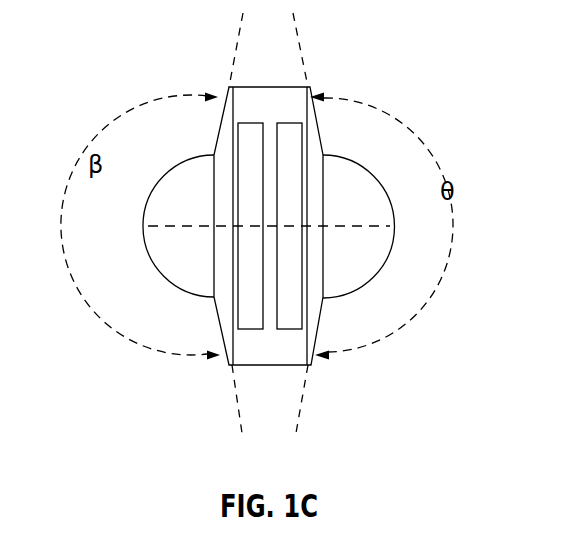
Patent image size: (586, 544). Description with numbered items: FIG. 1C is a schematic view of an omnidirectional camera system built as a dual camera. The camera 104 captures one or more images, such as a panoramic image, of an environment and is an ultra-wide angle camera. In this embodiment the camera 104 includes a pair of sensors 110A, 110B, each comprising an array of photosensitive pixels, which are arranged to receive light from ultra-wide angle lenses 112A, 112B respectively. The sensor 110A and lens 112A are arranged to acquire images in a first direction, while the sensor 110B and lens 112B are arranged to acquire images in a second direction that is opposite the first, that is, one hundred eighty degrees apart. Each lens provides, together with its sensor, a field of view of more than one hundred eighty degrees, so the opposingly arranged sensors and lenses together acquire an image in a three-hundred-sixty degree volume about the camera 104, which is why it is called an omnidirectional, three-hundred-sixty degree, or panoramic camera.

The camera 104 is at (250, 87).
The sensor 110A is at (287, 123).
The sensor 110B is at (250, 330).
The ultra-wide angle lens 112A is at (382, 282).
The ultra-wide angle lens 112B is at (133, 227).